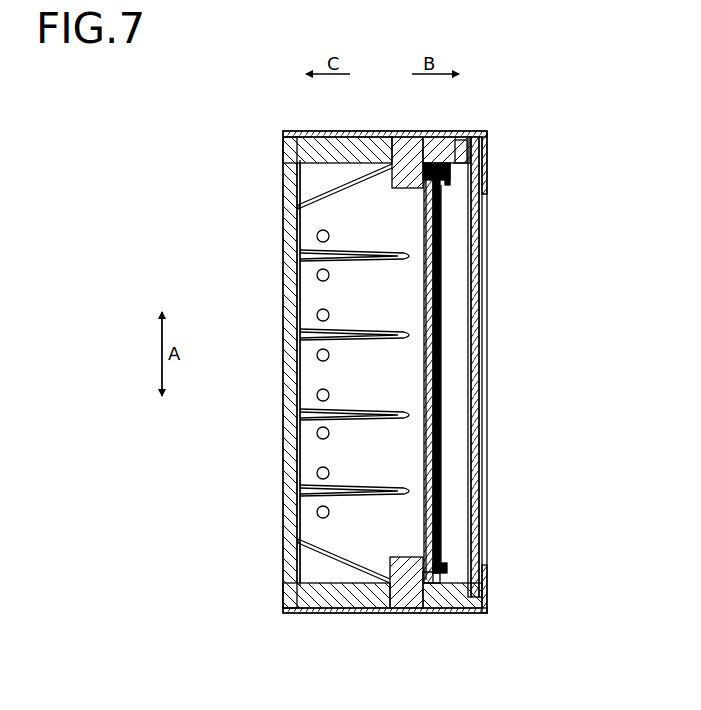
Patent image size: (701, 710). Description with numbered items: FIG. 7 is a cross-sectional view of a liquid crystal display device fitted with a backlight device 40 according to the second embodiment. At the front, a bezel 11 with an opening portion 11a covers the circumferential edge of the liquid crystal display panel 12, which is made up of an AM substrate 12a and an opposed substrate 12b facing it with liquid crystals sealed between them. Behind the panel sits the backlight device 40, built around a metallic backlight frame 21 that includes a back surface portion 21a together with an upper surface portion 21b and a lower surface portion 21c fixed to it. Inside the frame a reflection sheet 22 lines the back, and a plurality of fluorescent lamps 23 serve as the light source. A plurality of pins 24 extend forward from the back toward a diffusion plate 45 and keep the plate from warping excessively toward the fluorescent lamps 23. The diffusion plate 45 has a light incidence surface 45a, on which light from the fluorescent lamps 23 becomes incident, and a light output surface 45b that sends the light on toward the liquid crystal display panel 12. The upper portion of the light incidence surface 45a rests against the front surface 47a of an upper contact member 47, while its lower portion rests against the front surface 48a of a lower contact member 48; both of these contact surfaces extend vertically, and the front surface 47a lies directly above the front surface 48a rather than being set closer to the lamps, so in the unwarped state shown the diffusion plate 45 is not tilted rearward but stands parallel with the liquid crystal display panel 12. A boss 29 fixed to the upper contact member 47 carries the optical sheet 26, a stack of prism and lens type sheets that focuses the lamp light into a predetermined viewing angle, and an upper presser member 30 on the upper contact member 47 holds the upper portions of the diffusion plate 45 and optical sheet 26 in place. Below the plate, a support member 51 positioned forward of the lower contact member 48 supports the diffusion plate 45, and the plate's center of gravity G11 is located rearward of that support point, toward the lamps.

The backlight device 40 is at (267, 157).
The backlight frame 21 is at (331, 375).
The back surface portion 21a is at (300, 211).
The upper surface portion 21b is at (322, 148).
The lower surface portion 21c is at (322, 597).
The reflection sheet 22 is at (300, 183).
The fluorescent lamps 23 is at (316, 237).
The pins 24 is at (310, 258).
The upper contact member 47 is at (400, 140).
The front surface of upper contact member 47a is at (428, 152).
The boss 29 is at (462, 147).
The upper presser member 30 is at (470, 138).
The bezel 11 is at (488, 150).
The opening portion 11a is at (486, 194).
The liquid crystal display panel 12 is at (539, 232).
The AM substrate 12a is at (478, 242).
The opposed substrate 12b is at (478, 270).
The optical sheet 26 is at (441, 313).
The diffusion plate 45 is at (432, 345).
The light incidence surface 45a is at (430, 393).
The light output surface 45b is at (441, 390).
The center of gravity G11 is at (429, 377).
The lower contact member 48 is at (402, 600).
The front surface of lower contact member 48a is at (425, 577).
The support member 51 is at (440, 573).